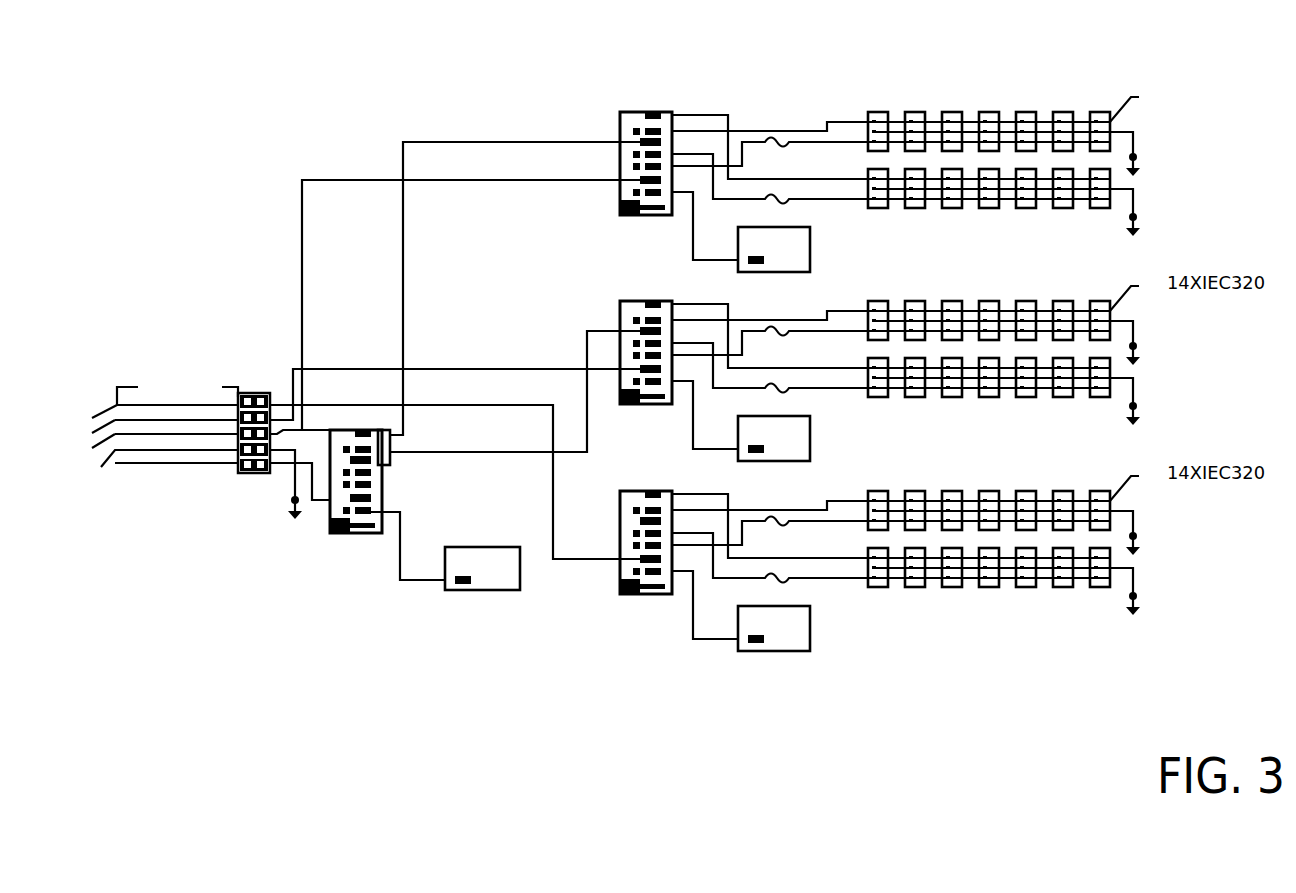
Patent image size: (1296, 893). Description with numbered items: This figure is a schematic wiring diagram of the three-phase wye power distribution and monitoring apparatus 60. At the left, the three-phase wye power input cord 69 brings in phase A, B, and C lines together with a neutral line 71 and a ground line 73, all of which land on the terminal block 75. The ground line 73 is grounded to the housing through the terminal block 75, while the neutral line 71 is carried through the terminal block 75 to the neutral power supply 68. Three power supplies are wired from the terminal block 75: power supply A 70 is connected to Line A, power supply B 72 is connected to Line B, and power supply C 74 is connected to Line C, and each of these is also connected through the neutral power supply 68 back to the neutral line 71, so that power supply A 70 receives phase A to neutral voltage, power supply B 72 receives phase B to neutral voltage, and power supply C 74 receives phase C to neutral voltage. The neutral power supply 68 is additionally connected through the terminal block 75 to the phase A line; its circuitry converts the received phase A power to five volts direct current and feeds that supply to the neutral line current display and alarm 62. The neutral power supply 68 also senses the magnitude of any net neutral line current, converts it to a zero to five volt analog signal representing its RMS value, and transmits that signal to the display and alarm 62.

The three-phase wye power distribution and monitoring apparatus 60 is at (840, 88).
The neutral line current display and alarm 62 is at (507, 592).
The neutral power supply 68 is at (360, 538).
The three-phase wye power input cord 69 is at (124, 371).
The power supply A 70 is at (620, 133).
The neutral line 71 is at (137, 465).
The power supply B 72 is at (620, 323).
The ground line 73 is at (101, 467).
The power supply C 74 is at (647, 597).
The terminal block 75 is at (255, 393).